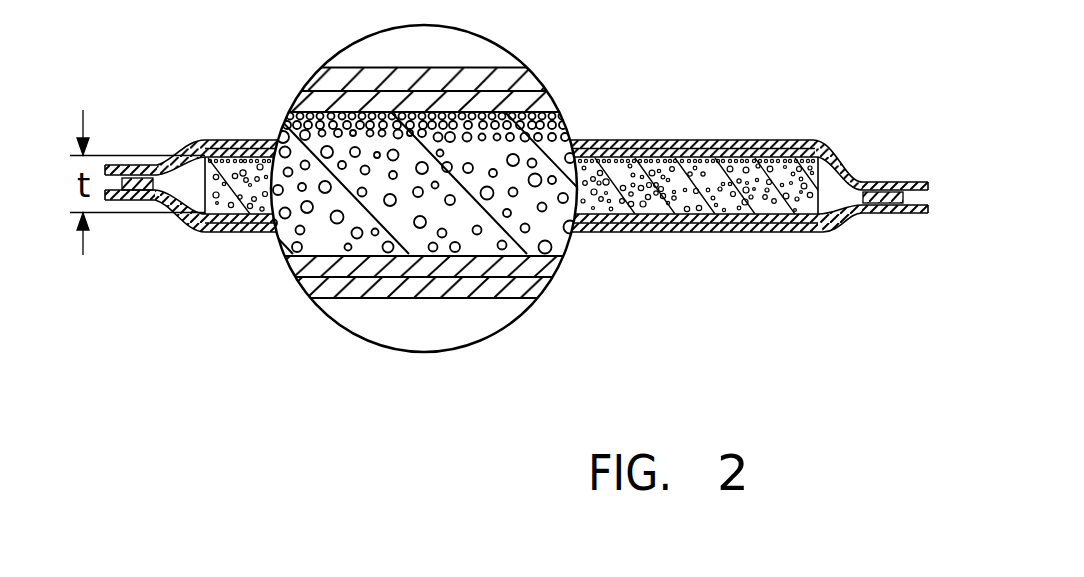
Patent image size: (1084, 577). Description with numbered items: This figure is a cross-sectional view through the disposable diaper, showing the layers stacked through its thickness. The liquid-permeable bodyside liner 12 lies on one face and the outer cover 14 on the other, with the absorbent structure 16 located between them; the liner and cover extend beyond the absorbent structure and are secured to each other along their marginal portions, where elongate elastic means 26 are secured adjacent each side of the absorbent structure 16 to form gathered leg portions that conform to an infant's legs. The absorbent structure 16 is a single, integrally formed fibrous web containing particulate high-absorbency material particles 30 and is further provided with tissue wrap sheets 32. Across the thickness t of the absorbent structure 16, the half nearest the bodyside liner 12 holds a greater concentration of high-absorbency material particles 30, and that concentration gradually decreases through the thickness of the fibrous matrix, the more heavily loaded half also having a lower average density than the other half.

The bodyside liner 12 is at (814, 145).
The outer cover 14 is at (823, 233).
The absorbent structure 16 is at (730, 152).
The elongate elastic means 26 is at (880, 187).
The high-absorbency material particles 30 is at (565, 118).
The tissue wrap sheets 32 is at (665, 150).